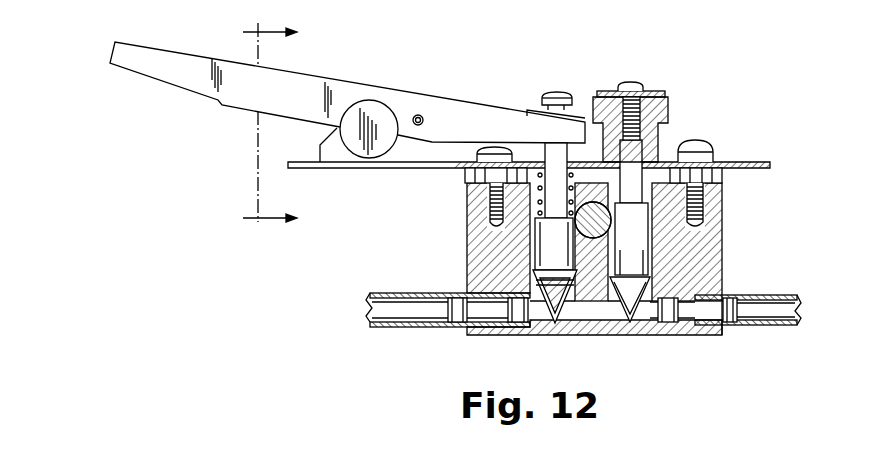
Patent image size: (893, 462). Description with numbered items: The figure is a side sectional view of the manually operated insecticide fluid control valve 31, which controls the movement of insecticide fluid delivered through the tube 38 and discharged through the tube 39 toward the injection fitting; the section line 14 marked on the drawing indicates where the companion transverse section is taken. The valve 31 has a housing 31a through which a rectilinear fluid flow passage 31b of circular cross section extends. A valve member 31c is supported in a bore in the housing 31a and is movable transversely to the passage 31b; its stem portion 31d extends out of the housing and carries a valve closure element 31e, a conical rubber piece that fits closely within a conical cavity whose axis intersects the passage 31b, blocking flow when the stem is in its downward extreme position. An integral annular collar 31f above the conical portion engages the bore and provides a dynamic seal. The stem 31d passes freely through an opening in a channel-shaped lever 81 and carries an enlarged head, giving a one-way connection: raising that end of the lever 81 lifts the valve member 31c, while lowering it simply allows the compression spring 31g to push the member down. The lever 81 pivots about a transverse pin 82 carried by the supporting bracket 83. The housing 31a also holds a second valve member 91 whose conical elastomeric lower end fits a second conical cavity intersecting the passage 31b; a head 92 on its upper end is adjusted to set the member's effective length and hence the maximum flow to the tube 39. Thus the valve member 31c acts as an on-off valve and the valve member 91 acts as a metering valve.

The section line 14- 14 is at (270, 127).
The lever 81 is at (450, 98).
The transverse pin 82 is at (418, 113).
The supporting bracket 83 is at (333, 152).
The insecticide fluid metering valve 31 is at (771, 131).
The housing 31a is at (708, 262).
The fluid flow passage 31b is at (593, 310).
The valve member 31c is at (555, 192).
The stem portion 31d is at (583, 92).
The valve closure element 31e is at (537, 284).
The annular collar 31f is at (545, 290).
The compression spring 31g is at (540, 175).
The valve member 91 is at (635, 228).
The head 92 is at (665, 93).
The tube 38 is at (432, 327).
The tube 39 is at (760, 327).